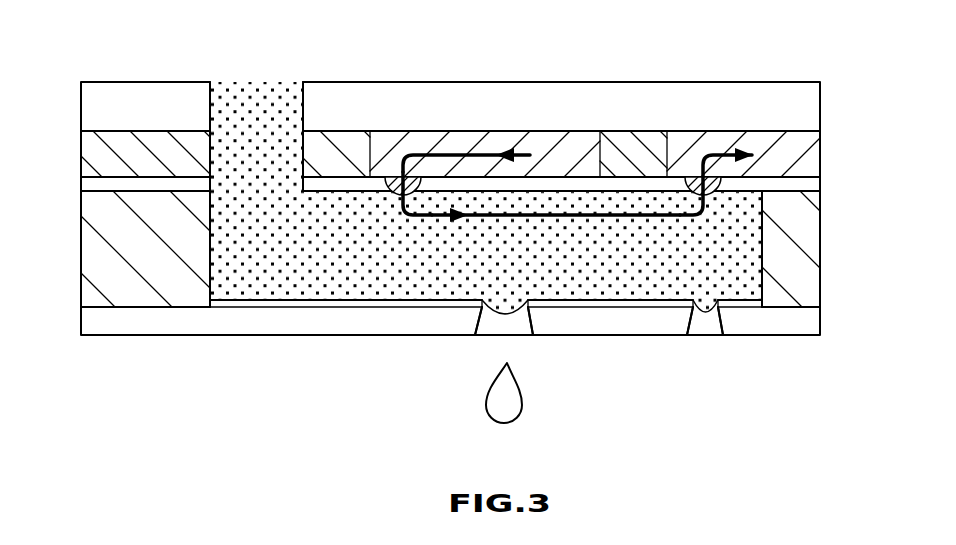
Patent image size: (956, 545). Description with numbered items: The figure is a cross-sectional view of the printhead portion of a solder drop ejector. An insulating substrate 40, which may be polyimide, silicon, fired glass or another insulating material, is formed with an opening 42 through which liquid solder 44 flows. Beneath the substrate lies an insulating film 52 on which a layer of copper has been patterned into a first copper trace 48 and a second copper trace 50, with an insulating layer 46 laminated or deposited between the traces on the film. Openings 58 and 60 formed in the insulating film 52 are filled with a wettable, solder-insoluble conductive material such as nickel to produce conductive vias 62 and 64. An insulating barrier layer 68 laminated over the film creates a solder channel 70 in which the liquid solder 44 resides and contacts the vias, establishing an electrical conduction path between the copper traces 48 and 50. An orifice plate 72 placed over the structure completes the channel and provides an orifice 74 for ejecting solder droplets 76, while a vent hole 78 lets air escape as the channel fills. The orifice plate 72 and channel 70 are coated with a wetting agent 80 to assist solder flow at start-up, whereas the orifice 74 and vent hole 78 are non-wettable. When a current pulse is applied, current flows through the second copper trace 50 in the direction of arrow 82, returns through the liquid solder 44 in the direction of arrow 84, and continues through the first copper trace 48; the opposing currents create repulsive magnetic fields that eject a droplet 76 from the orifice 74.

The insulating substrate 40 is at (146, 96).
The opening 42 is at (235, 67).
The liquid solder 44 is at (262, 110).
The insulating layer 46 is at (80, 152).
The first copper trace 48 is at (822, 150).
The second copper trace 50 is at (568, 135).
The insulating film 52 is at (80, 185).
The opening 58 is at (386, 197).
The opening 60 is at (712, 198).
The conductive via 62 is at (410, 220).
The conductive via 64 is at (702, 212).
The insulating barrier layer 68 is at (80, 245).
The solder channel 70 is at (273, 267).
The orifice plate 72 is at (80, 322).
The orifice 74 is at (510, 326).
The solder droplet 76 is at (512, 405).
The vent hole 78 is at (708, 340).
The wetting agent 80 is at (340, 308).
The arrow 82 is at (498, 150).
The arrow 84 is at (462, 221).